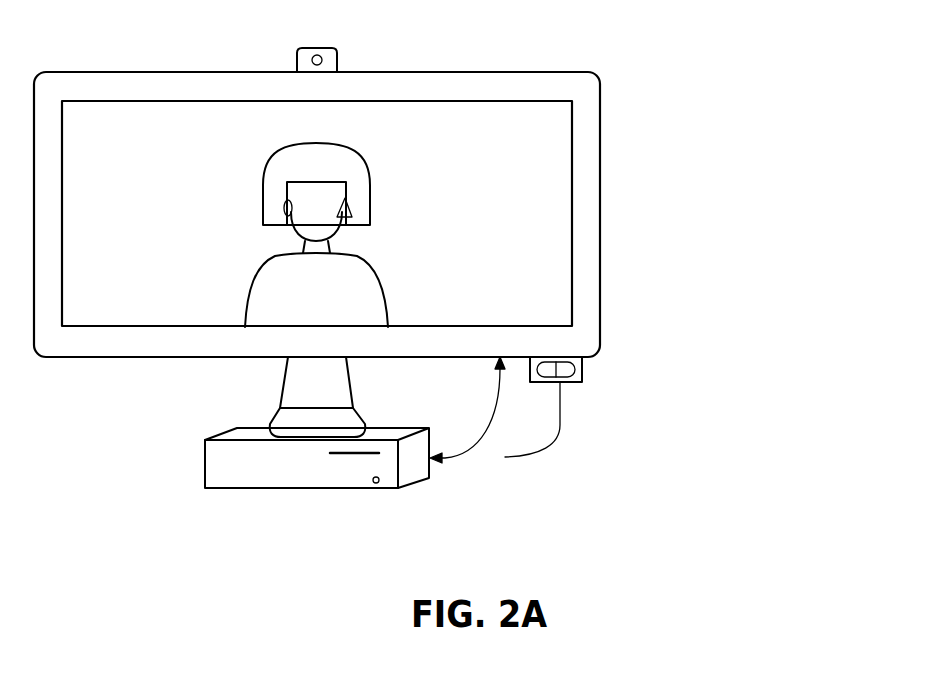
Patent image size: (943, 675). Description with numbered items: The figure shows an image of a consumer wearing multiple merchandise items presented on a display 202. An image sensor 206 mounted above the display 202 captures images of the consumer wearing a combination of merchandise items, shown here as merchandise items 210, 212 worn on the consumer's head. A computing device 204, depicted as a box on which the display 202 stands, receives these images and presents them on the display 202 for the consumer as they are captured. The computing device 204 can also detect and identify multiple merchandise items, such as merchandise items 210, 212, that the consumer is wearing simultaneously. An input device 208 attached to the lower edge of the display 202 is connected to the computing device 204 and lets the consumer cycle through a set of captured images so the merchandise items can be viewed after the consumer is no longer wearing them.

The display 202 is at (420, 72).
The computing device 204 is at (205, 459).
The image sensor 206 is at (316, 48).
The input device 208 is at (582, 372).
The merchandise item 210 is at (288, 212).
The merchandise item 212 is at (350, 210).